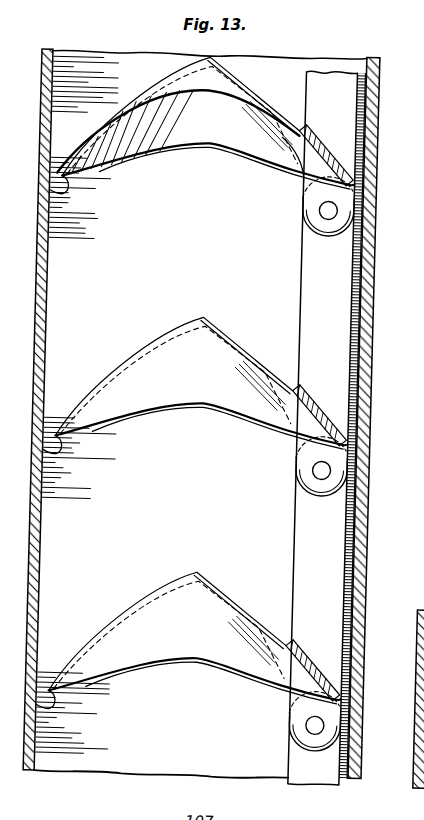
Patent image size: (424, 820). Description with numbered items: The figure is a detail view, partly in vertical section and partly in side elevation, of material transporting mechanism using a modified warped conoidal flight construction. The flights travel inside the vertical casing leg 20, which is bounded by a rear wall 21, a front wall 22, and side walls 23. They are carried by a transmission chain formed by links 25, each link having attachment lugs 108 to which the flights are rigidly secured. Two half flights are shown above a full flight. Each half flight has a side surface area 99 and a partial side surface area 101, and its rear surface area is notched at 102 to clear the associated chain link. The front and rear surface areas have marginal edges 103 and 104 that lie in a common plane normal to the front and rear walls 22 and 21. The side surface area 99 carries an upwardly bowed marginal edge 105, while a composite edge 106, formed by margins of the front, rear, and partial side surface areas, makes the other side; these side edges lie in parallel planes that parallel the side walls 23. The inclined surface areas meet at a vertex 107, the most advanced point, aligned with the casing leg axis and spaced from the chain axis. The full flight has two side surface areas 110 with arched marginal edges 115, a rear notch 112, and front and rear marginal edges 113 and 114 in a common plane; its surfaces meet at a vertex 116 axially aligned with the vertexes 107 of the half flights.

The vertical casing leg 20 is at (66, 781).
The rear wall 21 is at (380, 566).
The front wall 22 is at (54, 541).
The side walls 23 is at (423, 626).
The links 25 is at (307, 286).
The side surface area 99 is at (212, 375).
The partial side surface area 101 is at (214, 95).
The notch 102 is at (311, 128).
The marginal edge 103 is at (73, 189).
The marginal edge 104 is at (369, 191).
The curved marginal edge 105 is at (211, 154).
The composite edge 106 is at (232, 105).
The vertex 107 is at (200, 66).
The attachment lugs 108 is at (288, 154).
The side surface areas 110 is at (218, 628).
The notch 112 is at (321, 646).
The marginal edge 113 is at (65, 690).
The marginal edge 114 is at (357, 697).
The curved marginal edges 115 is at (216, 666).
The vertex 116 is at (219, 571).